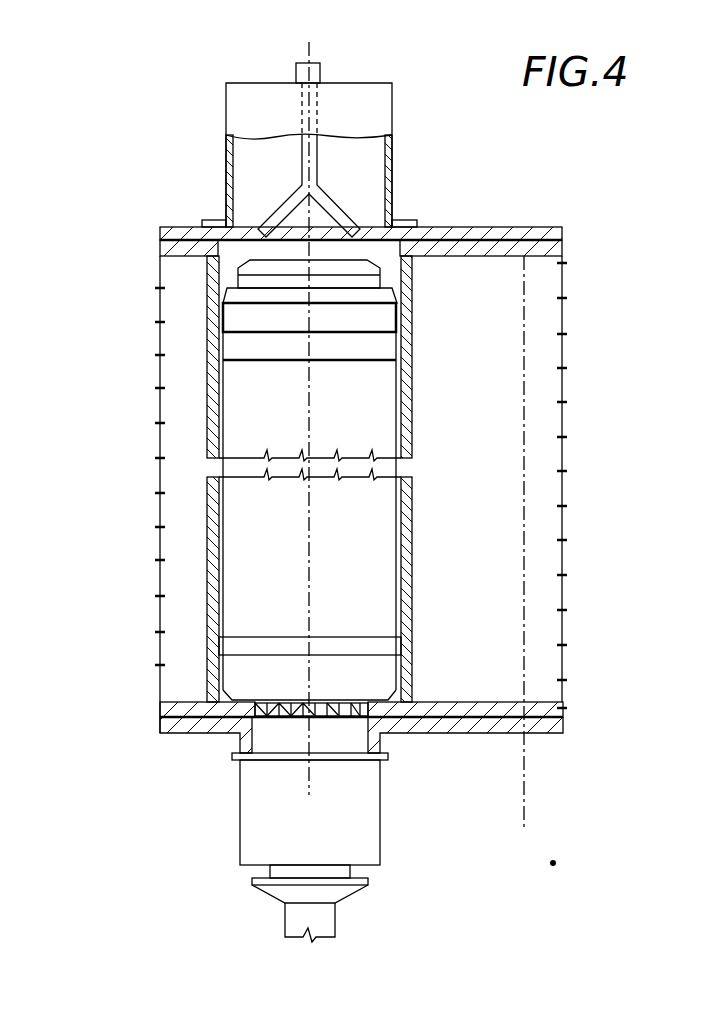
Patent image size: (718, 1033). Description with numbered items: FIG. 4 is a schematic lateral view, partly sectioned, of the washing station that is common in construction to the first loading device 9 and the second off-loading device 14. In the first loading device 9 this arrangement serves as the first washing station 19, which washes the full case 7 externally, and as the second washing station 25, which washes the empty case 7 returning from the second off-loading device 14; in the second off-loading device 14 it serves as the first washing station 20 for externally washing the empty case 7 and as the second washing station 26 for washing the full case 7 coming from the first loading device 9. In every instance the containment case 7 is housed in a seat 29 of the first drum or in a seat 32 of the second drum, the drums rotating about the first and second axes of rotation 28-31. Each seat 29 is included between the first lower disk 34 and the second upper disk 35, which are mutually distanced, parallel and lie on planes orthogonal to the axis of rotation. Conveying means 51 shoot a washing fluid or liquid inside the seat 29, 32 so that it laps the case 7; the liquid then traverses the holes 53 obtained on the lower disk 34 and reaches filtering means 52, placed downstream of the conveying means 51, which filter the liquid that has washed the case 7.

The second washing station 26 is at (210, 138).
The first washing station 20 is at (183, 175).
The second washing station 25 is at (177, 215).
The conveying means 51 is at (336, 186).
The first washing station 19 is at (438, 213).
The second off-loading device 14 is at (500, 198).
The first loading device 9 is at (558, 210).
The second upper disk 35 is at (562, 263).
The seats 29 is at (190, 360).
The first and second axes of rotation 28-31 is at (524, 392).
The seats 32 is at (193, 298).
The containment case 7 is at (250, 437).
The first lower disk 34 is at (542, 708).
The holes 53 is at (292, 710).
The filtering means 52 is at (268, 797).